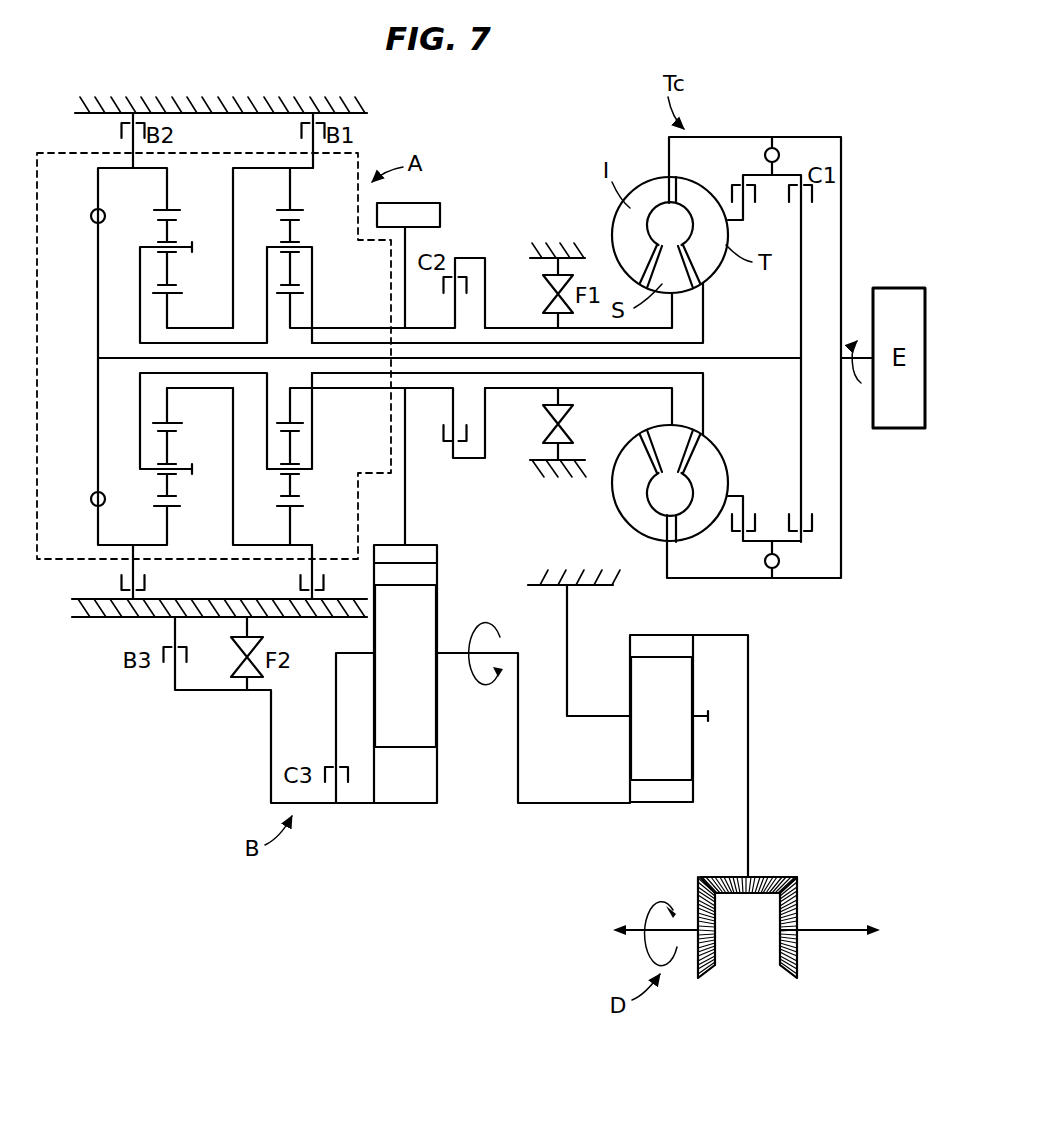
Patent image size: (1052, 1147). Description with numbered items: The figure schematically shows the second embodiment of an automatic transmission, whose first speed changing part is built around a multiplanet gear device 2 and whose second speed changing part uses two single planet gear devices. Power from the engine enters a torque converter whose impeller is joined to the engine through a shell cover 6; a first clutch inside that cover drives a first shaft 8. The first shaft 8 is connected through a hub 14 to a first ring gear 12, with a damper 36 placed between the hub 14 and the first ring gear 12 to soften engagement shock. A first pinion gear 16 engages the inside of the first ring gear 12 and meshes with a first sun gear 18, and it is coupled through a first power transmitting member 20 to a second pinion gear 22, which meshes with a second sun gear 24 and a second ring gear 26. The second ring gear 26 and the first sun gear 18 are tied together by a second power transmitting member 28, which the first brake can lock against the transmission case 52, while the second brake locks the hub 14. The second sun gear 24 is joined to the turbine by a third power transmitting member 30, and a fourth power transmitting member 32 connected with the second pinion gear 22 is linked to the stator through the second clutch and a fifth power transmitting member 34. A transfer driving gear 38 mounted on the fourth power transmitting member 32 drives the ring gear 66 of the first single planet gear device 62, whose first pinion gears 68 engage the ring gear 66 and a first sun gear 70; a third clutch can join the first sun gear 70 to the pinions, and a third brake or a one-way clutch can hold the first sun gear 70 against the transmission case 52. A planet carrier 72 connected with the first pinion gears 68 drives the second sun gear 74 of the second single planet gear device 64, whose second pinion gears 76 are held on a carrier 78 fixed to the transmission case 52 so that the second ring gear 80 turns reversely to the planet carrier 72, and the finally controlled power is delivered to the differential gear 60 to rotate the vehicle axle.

The multiplanet gear device 2 is at (49, 152).
The shell cover 6 is at (755, 136).
The first shaft 8 is at (752, 357).
The first ring gear 12 is at (157, 209).
The hub 14 is at (97, 292).
The first pinion gear 16 is at (178, 284).
The first sun gear 18 is at (178, 294).
The first power transmitting member 20 is at (157, 344).
The second pinion gear 22 is at (298, 220).
The second sun gear 24 is at (303, 293).
The second ring gear 26 is at (287, 209).
The second power transmitting member 28 is at (232, 196).
The third power transmitting member 30 is at (704, 360).
The fourth power transmitting member 32 is at (313, 268).
The fifth power transmitting member 34 is at (510, 326).
The damper 36 is at (92, 216).
The transfer driving gear 38 is at (430, 215).
The transmission case 52 is at (232, 99).
The differential gear 60 is at (840, 929).
The first single planet gear device 62 is at (382, 830).
The second single planet gear device 64 is at (626, 814).
The ring gear 66 is at (428, 578).
The first pinion gears 68 is at (428, 716).
The first sun gear 70 is at (410, 804).
The planet carrier 72 is at (518, 757).
The second sun gear 74 is at (660, 803).
The second pinion gears 76 is at (630, 680).
The carrier 78 is at (566, 607).
The second ring gear 80 is at (665, 634).